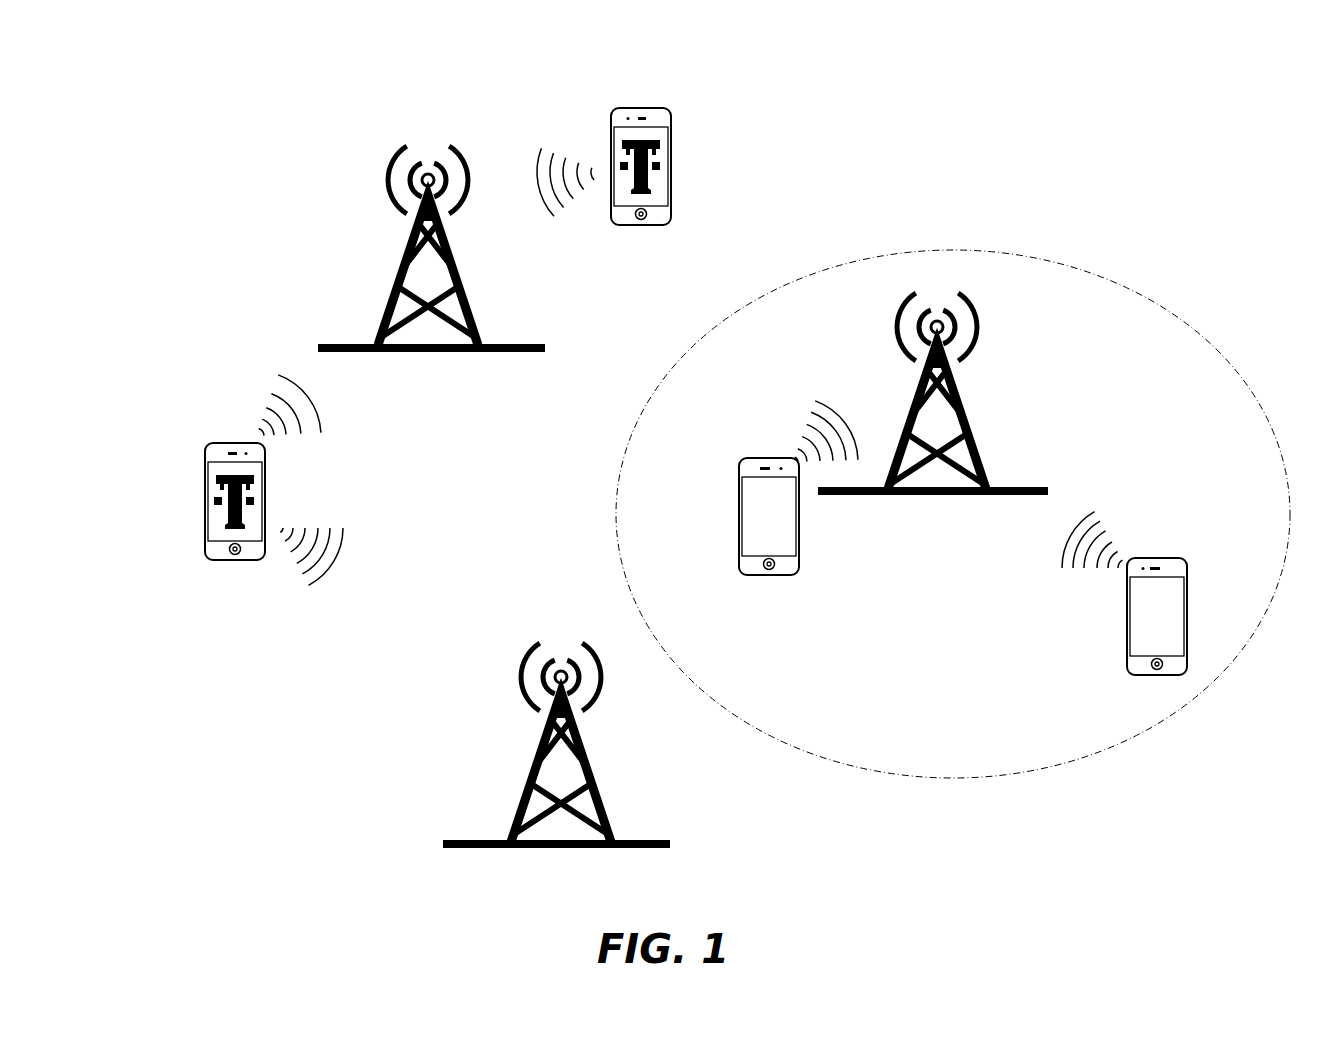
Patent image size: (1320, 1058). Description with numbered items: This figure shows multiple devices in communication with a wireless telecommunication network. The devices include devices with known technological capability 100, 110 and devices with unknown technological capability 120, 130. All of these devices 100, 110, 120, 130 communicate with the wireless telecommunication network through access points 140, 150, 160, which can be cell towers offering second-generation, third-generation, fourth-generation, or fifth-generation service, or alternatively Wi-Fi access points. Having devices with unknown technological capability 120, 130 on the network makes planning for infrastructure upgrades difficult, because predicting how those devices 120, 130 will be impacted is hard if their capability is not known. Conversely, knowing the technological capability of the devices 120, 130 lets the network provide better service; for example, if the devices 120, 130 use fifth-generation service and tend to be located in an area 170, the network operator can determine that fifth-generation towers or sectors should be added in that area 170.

The device with known technological capability 100 is at (210, 556).
The device with known technological capability 110 is at (648, 110).
The device with unknown technological capability 120 is at (1152, 560).
The device with unknown technological capability 130 is at (750, 578).
The access point 140 is at (378, 335).
The access point 150 is at (525, 790).
The access point 160 is at (972, 432).
The area 170 is at (1087, 270).